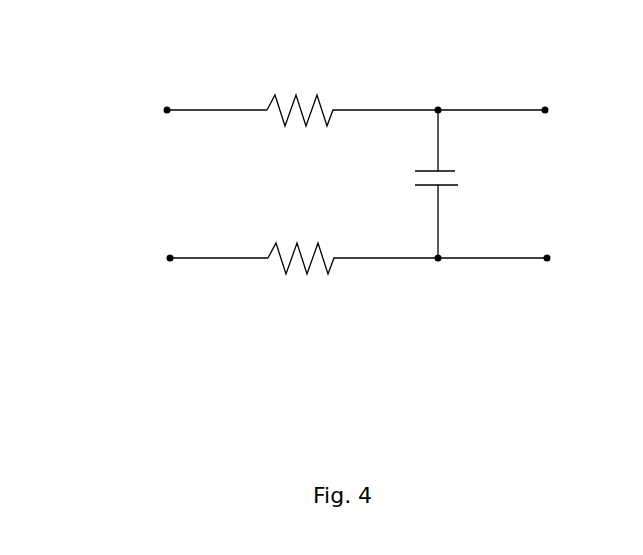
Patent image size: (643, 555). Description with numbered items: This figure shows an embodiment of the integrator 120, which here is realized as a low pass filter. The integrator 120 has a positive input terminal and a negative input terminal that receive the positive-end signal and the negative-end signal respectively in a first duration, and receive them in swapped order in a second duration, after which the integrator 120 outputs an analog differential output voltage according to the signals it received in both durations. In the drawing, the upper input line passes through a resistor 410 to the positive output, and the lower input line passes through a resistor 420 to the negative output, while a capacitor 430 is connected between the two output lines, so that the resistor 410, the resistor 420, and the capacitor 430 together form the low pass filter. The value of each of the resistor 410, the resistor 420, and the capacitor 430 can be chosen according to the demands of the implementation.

The integrator 120 is at (102, 371).
The resistor 410 is at (300, 96).
The resistor 420 is at (300, 243).
The capacitor 430 is at (456, 172).